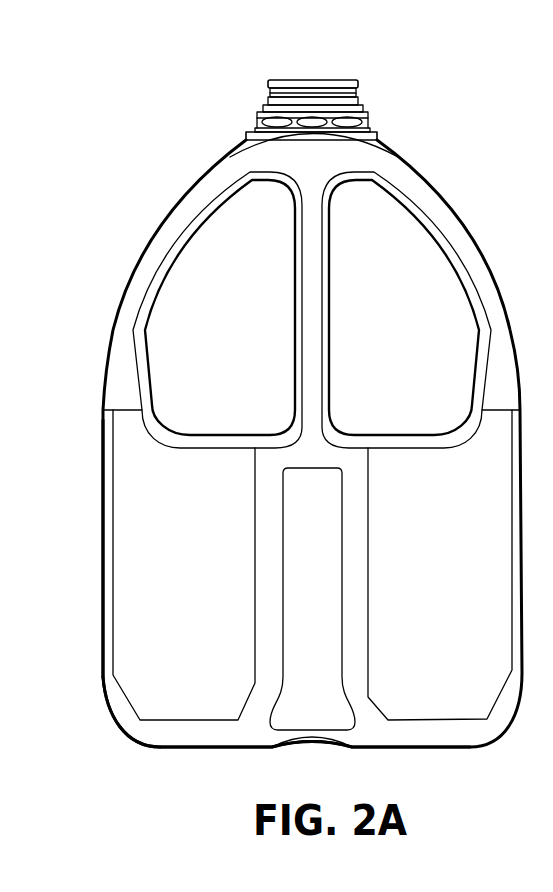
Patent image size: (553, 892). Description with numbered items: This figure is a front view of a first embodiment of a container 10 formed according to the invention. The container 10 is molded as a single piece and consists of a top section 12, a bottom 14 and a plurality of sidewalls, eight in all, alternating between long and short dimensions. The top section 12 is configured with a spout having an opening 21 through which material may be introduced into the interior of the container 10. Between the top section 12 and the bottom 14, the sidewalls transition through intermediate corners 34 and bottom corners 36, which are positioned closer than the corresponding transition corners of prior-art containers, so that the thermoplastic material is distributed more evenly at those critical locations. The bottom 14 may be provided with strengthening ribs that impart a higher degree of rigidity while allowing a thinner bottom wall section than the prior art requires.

The container 10 is at (482, 228).
The top section 12 is at (398, 148).
The opening 21 is at (320, 79).
The intermediate corners 34 is at (103, 677).
The bottom corners 36 is at (140, 742).
The bottom 14 is at (419, 735).